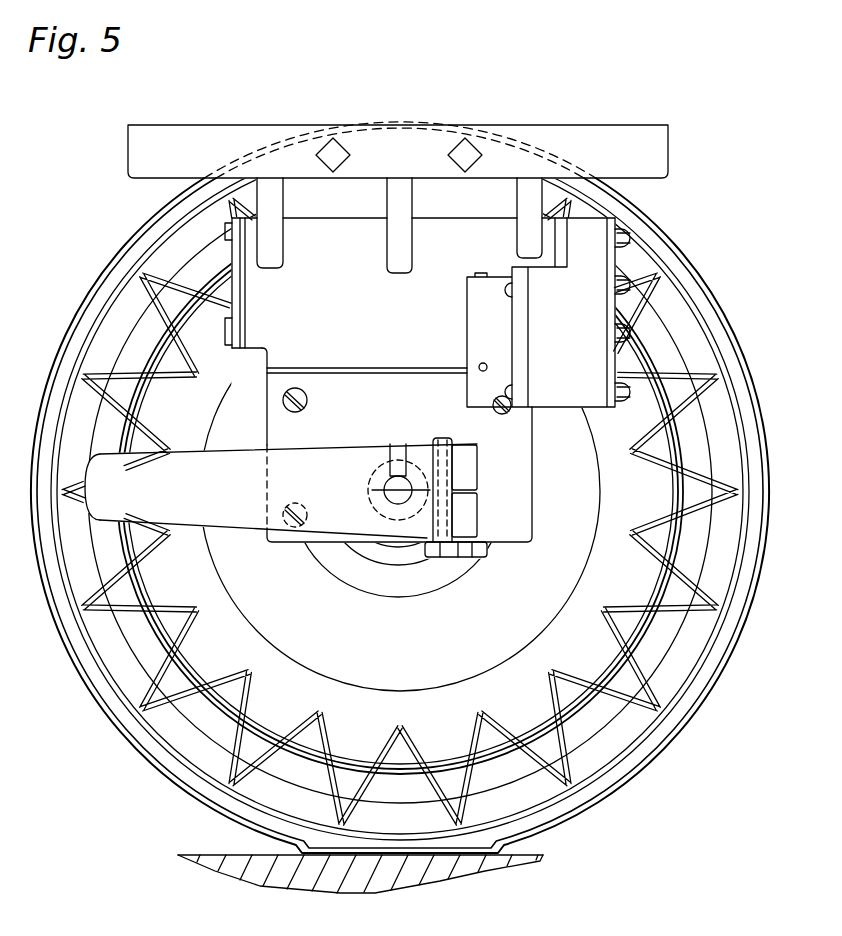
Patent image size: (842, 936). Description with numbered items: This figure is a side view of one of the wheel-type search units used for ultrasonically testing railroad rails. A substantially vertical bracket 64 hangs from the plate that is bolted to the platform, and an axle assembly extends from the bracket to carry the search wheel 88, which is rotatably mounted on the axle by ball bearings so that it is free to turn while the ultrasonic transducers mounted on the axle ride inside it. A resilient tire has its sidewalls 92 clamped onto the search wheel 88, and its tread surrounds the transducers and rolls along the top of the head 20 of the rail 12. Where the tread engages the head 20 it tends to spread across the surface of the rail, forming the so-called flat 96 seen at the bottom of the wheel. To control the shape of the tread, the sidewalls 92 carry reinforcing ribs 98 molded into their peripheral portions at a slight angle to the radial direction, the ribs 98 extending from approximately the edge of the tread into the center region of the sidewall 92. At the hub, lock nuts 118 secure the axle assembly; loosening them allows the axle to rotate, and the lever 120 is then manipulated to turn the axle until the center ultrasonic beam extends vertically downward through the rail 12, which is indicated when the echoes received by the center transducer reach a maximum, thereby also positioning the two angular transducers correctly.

The rail 12 is at (480, 876).
The head 20 is at (400, 877).
The bracket 64 is at (517, 472).
The search wheel 88 is at (332, 655).
The sidewalls 92 is at (530, 672).
The flat 96 is at (402, 852).
The ribs 98 is at (460, 754).
The lock nuts 118 is at (456, 562).
The lever 120 is at (250, 442).